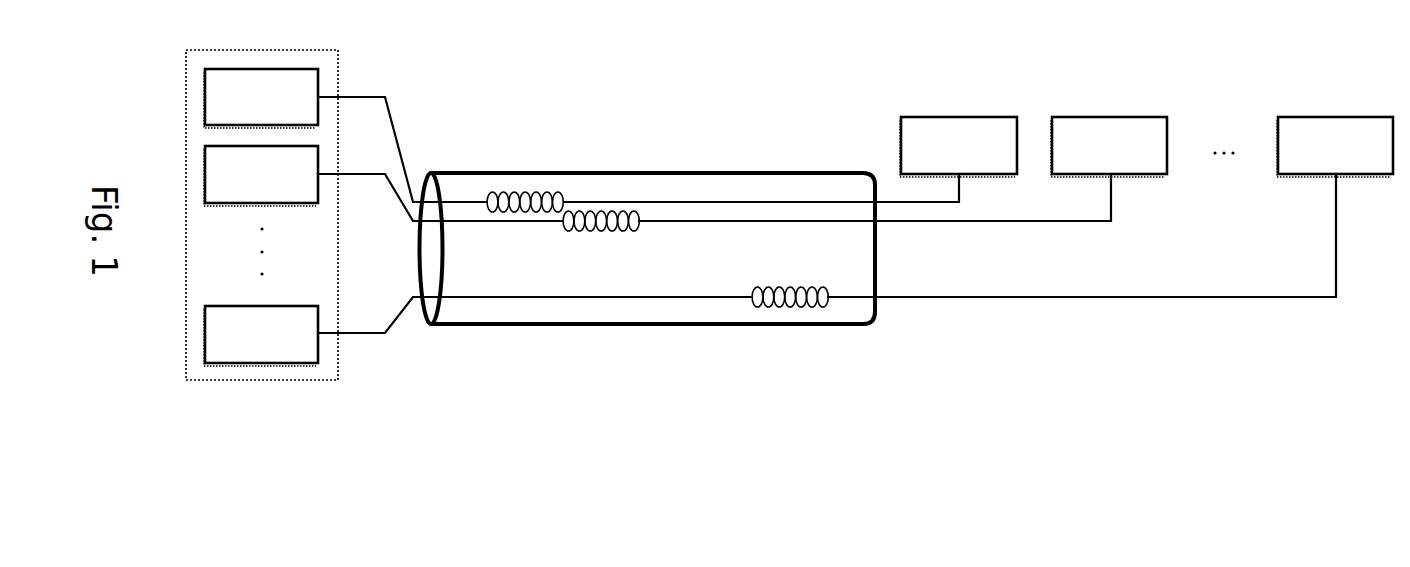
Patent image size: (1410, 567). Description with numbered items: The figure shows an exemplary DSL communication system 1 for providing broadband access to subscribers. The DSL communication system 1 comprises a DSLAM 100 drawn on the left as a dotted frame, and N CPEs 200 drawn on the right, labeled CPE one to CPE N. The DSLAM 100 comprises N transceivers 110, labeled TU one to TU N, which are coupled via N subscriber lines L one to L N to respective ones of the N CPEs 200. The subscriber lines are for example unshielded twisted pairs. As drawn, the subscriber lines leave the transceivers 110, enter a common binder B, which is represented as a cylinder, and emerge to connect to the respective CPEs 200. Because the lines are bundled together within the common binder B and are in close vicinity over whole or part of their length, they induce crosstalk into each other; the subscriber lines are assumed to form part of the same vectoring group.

The DSL communication system 1 is at (1236, 436).
The DSLAM 100 is at (338, 380).
The transceiver 110 is at (204, 69).
The CPE 200 is at (901, 117).